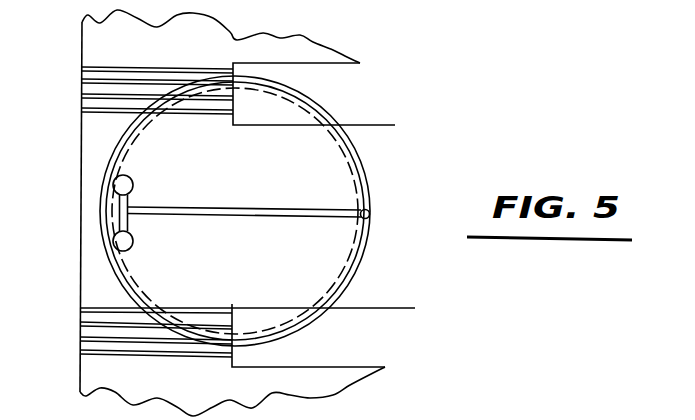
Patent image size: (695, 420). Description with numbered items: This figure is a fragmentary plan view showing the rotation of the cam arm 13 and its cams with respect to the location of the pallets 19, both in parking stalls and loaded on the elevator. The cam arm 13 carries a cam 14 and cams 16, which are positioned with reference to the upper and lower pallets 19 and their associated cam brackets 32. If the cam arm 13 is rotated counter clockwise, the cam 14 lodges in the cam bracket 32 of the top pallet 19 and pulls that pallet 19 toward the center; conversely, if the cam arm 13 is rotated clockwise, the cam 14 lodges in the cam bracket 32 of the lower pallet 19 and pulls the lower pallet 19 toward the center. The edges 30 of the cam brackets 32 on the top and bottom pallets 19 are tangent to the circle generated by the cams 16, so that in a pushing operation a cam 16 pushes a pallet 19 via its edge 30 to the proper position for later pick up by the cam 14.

The cam arm 13 is at (207, 198).
The cam 14 is at (371, 210).
The cam 16 is at (133, 179).
The pallet 19 is at (102, 33).
The edge 30 is at (136, 95).
The cam bracket 32 is at (90, 78).